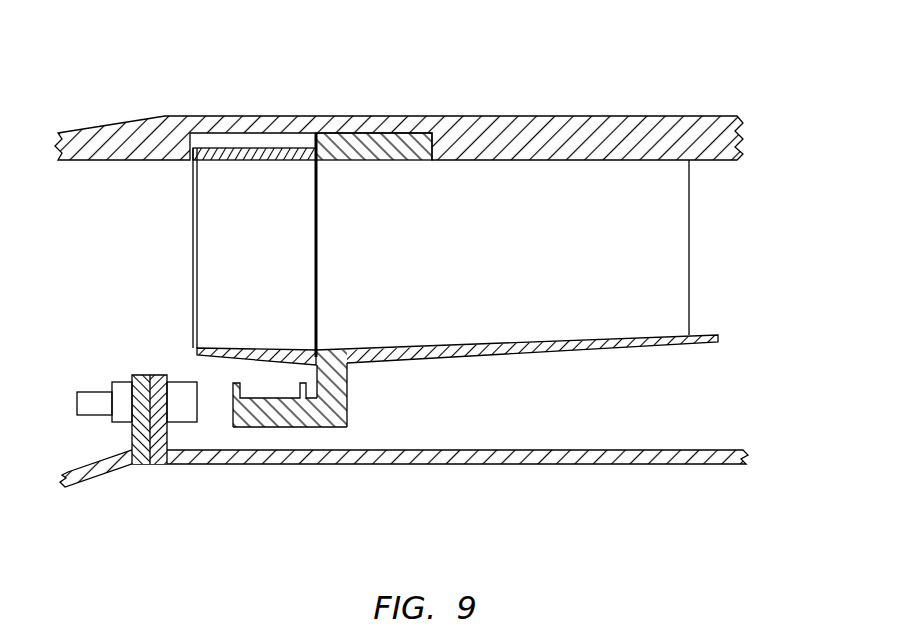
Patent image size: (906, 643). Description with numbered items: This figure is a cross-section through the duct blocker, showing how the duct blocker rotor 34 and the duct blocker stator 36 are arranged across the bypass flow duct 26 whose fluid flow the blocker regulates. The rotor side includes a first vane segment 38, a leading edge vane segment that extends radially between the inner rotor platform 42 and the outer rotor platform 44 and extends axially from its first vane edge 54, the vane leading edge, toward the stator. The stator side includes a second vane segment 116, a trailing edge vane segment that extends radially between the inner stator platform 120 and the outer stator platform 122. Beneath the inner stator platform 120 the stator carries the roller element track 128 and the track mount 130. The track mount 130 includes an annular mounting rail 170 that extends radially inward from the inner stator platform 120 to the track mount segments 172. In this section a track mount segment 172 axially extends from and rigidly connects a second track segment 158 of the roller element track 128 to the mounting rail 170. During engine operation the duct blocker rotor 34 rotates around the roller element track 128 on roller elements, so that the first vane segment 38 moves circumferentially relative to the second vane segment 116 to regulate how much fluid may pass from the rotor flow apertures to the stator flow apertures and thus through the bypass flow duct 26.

The bypass flow duct 26 is at (84, 254).
The duct blocker rotor 34 is at (184, 263).
The duct blocker stator 36 is at (706, 254).
The first vane segment 38 is at (195, 204).
The inner rotor platform 42 is at (201, 366).
The outer rotor platform 44 is at (250, 150).
The first vane edge 54 is at (196, 330).
The second vane segment 116 is at (690, 298).
The inner stator platform 120 is at (503, 355).
The outer stator platform 122 is at (412, 146).
The roller element track 128 is at (281, 440).
The track mount 130 is at (357, 418).
The second track segment 158 is at (257, 440).
The mounting rail 170 is at (346, 379).
The track mount segment 172 is at (313, 418).